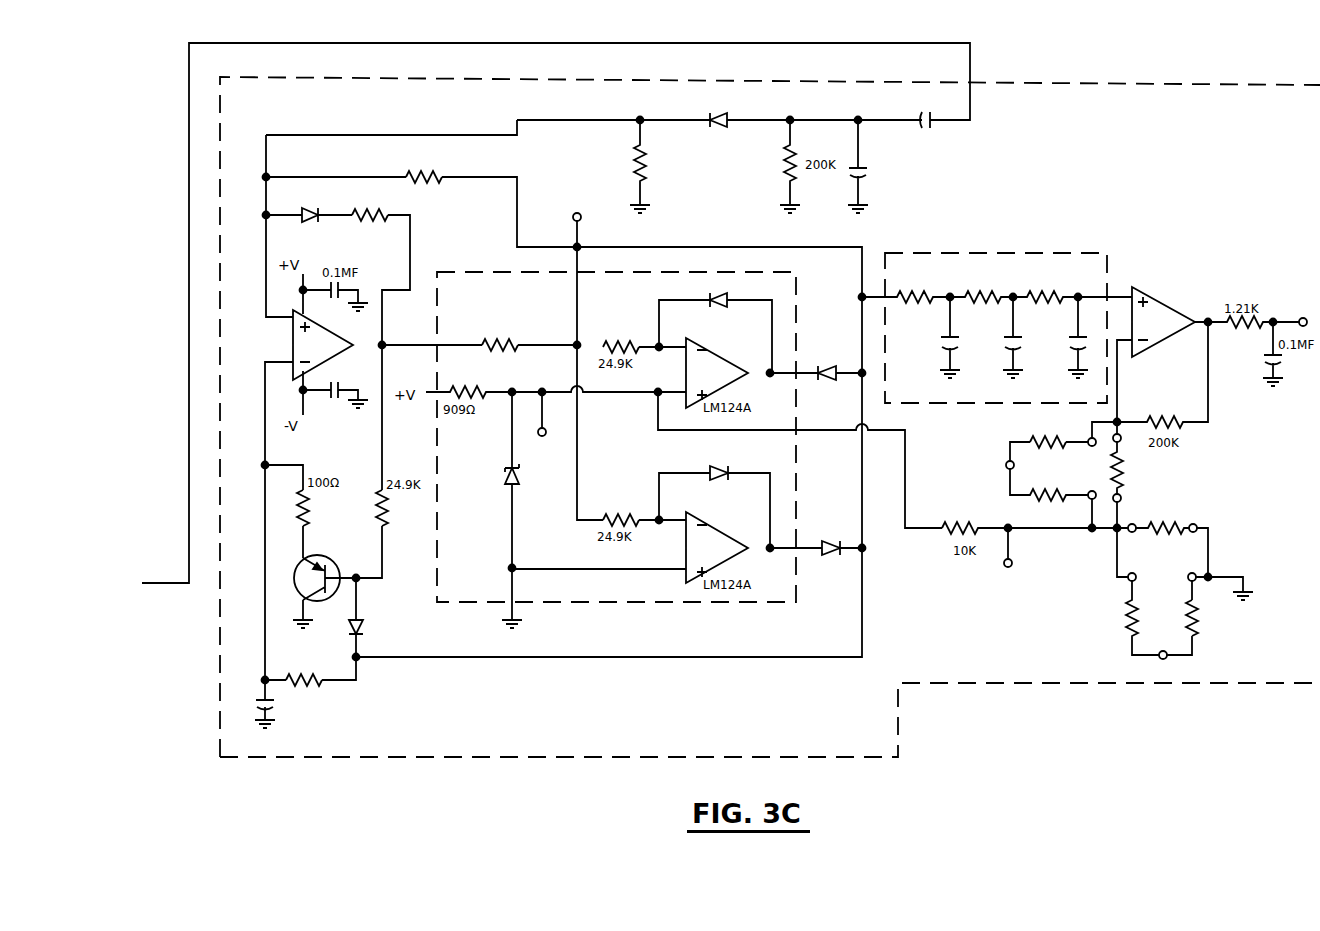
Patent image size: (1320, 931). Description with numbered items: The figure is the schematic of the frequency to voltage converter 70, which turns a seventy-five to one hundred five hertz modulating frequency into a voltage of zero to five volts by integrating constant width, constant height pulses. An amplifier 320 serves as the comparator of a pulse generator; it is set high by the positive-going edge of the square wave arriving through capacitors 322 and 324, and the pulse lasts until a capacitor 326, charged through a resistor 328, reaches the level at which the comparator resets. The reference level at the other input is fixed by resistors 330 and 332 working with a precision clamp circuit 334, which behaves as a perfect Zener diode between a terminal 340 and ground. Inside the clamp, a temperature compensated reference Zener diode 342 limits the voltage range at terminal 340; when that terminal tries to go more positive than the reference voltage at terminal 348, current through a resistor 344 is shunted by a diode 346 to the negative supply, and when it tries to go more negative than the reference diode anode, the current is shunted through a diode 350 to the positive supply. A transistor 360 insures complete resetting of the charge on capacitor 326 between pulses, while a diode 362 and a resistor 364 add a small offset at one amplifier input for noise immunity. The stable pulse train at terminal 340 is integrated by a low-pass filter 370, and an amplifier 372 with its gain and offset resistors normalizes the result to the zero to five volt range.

The frequency to voltage converter 70 is at (220, 669).
The amplifier 320 is at (292, 339).
The capacitor 322 is at (933, 128).
The capacitor 324 is at (865, 160).
The capacitor 326 is at (270, 709).
The resistor 328 is at (320, 686).
The resistor 330 is at (635, 160).
The resistor 332 is at (406, 172).
The precision clamp circuit 334 is at (756, 269).
The terminal 340 is at (577, 212).
The reference Zener diode 342 is at (503, 487).
The resistor 344 is at (510, 340).
The diode 346 is at (832, 366).
The terminal 348 is at (547, 436).
The diode 350 is at (836, 540).
The transistor 360 is at (332, 546).
The diode 362 is at (312, 222).
The resistor 364 is at (390, 212).
The low-pass filter 370 is at (985, 253).
The amplifier 372 is at (1153, 290).